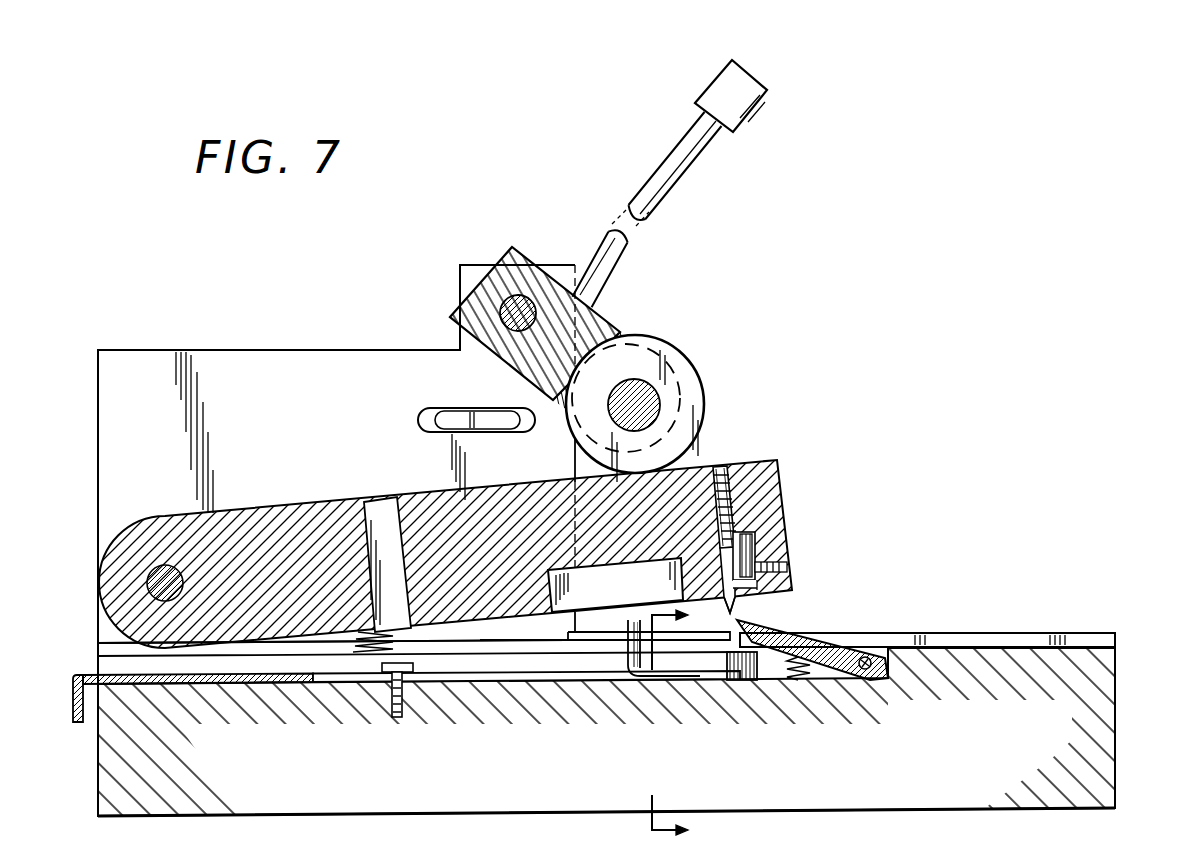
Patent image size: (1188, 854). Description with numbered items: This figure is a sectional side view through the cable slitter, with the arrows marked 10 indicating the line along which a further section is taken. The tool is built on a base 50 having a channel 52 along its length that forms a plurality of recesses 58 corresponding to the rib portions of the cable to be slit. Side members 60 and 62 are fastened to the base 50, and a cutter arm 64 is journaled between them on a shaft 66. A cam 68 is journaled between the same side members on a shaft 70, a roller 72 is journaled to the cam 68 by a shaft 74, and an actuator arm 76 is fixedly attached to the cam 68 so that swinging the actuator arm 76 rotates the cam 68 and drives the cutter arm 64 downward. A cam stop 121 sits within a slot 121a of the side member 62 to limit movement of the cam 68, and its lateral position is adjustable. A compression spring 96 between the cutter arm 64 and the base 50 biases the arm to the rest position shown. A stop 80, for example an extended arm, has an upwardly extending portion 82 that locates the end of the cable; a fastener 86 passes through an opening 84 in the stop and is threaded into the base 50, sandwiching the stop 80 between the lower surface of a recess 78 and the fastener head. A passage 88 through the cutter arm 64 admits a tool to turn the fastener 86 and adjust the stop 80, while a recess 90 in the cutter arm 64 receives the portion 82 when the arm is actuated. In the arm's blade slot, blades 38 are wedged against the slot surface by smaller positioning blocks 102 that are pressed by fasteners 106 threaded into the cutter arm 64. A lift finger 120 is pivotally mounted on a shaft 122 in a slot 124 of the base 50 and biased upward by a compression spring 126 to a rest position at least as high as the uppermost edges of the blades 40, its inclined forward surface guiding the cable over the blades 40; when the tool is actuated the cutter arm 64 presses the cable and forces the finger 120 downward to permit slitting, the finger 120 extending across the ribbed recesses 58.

The section line 10 is at (690, 725).
The blades 38 is at (737, 607).
The blades 40 is at (612, 628).
The base 50 is at (1118, 722).
The channel 52 is at (1020, 636).
The recesses 58 is at (1118, 645).
The side member 60 is at (97, 430).
The side member 62 is at (297, 349).
The cutter arm 64 is at (270, 503).
The shaft 66 is at (147, 580).
The cam 68 is at (614, 322).
The shaft 70 is at (500, 312).
The roller 72 is at (706, 408).
The shaft 74 is at (658, 385).
The actuator arm 76 is at (670, 158).
The recess 78 is at (648, 678).
The stop 80 is at (73, 690).
The upwardly extending portion 82 is at (638, 602).
The opening 84 is at (447, 688).
The fastener 86 is at (390, 703).
The passage 88 is at (371, 500).
The recess 90 is at (562, 612).
The compression spring 96 is at (416, 625).
The positioning blocks 102 is at (783, 521).
The fasteners 106 is at (788, 548).
The lift finger 120 is at (800, 638).
The cam stop 121 is at (525, 432).
The slot 121a is at (425, 422).
The shaft 122 is at (870, 658).
The slot 124 is at (757, 681).
The compression spring 126 is at (812, 676).